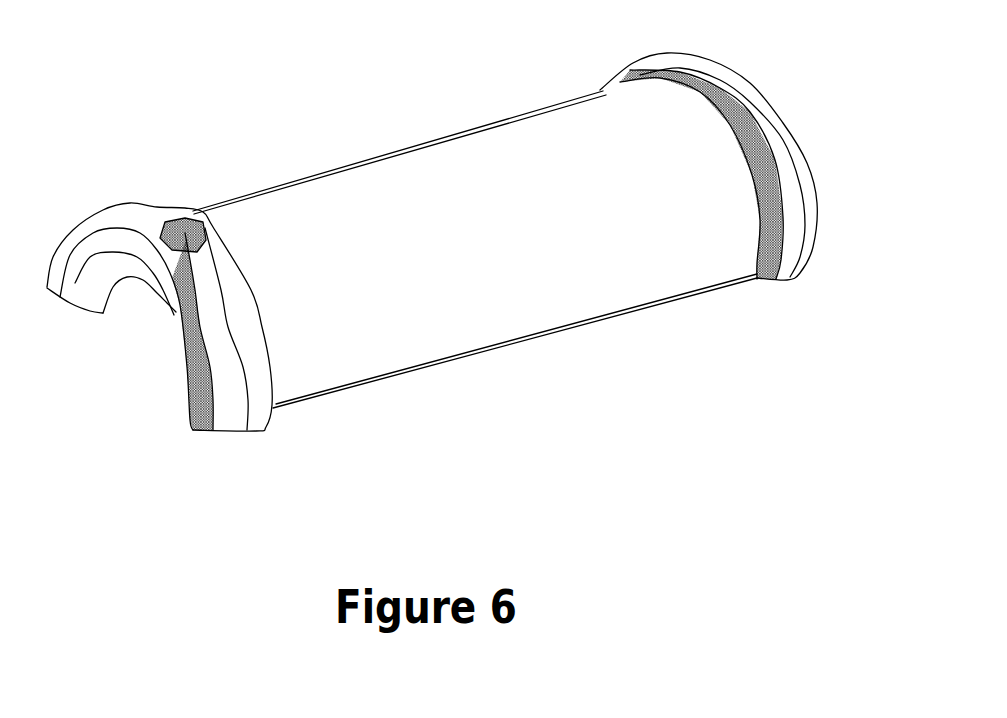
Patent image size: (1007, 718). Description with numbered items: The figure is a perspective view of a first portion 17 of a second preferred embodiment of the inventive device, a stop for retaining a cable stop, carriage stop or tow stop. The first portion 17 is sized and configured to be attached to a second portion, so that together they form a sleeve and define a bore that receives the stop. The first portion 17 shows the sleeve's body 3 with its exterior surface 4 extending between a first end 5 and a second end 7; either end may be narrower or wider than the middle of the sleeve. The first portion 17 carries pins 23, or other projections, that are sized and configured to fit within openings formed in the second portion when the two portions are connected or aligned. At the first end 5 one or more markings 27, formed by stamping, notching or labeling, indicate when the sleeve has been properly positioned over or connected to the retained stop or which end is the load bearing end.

The body 3 is at (475, 255).
The exterior surface 4 is at (362, 192).
The first end 5 is at (748, 260).
The second end 7 is at (153, 285).
The first portion 17 is at (582, 332).
The pins 23 is at (767, 288).
The markings 27 is at (143, 205).